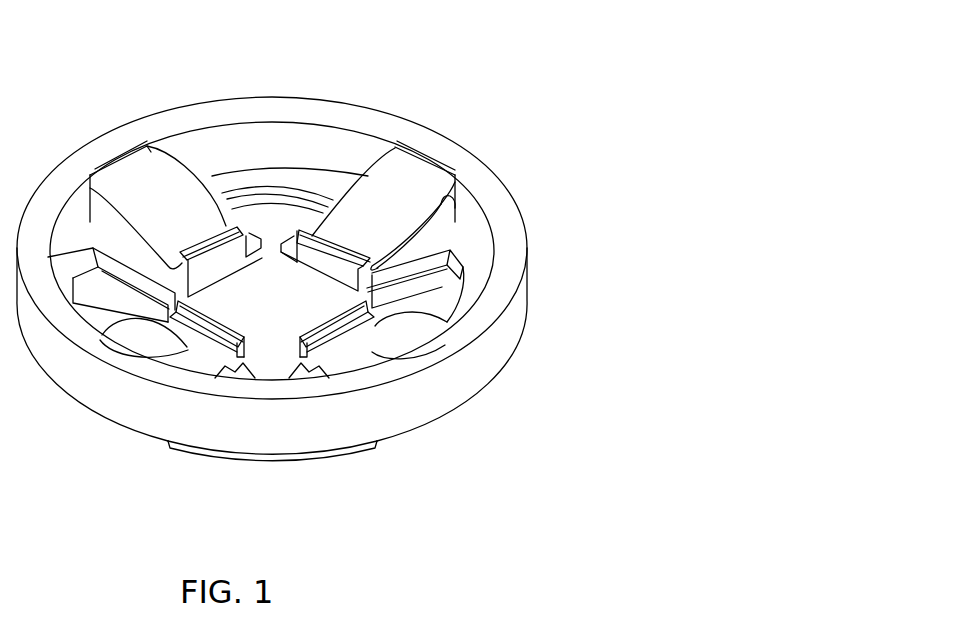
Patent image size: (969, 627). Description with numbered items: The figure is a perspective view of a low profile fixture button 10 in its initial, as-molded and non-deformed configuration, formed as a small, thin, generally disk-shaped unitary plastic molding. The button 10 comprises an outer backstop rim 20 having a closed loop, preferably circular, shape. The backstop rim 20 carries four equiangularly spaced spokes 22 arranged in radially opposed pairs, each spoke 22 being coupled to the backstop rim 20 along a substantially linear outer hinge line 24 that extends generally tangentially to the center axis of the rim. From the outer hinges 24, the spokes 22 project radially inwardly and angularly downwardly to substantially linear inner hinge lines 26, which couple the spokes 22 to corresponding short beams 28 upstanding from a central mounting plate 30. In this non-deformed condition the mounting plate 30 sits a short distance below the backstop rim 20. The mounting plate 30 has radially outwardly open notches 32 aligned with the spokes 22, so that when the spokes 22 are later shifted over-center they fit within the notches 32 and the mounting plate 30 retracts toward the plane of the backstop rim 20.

The low profile fixture button 10 is at (560, 88).
The backstop rim 20 is at (475, 363).
The spoke 22 is at (177, 192).
The outer hinge line 24 is at (128, 173).
The inner hinge line 26 is at (205, 243).
The short beam 28 is at (240, 250).
The mounting plate 30 is at (289, 292).
The notch 32 is at (167, 442).